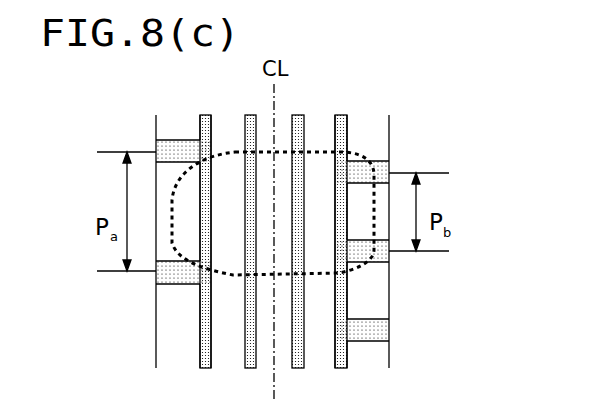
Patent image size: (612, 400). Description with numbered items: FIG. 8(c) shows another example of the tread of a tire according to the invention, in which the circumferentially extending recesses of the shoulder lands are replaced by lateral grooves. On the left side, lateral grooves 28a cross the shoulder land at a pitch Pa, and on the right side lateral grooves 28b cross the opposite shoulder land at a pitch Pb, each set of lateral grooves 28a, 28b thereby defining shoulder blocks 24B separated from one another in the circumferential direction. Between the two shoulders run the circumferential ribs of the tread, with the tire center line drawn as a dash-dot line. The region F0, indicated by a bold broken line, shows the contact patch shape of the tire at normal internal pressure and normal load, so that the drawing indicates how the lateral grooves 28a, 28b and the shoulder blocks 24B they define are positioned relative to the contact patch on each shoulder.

The shoulder blocks 24B is at (165, 128).
The lateral grooves 28a is at (185, 148).
The lateral grooves 28b is at (378, 170).
The region F0 is at (316, 150).